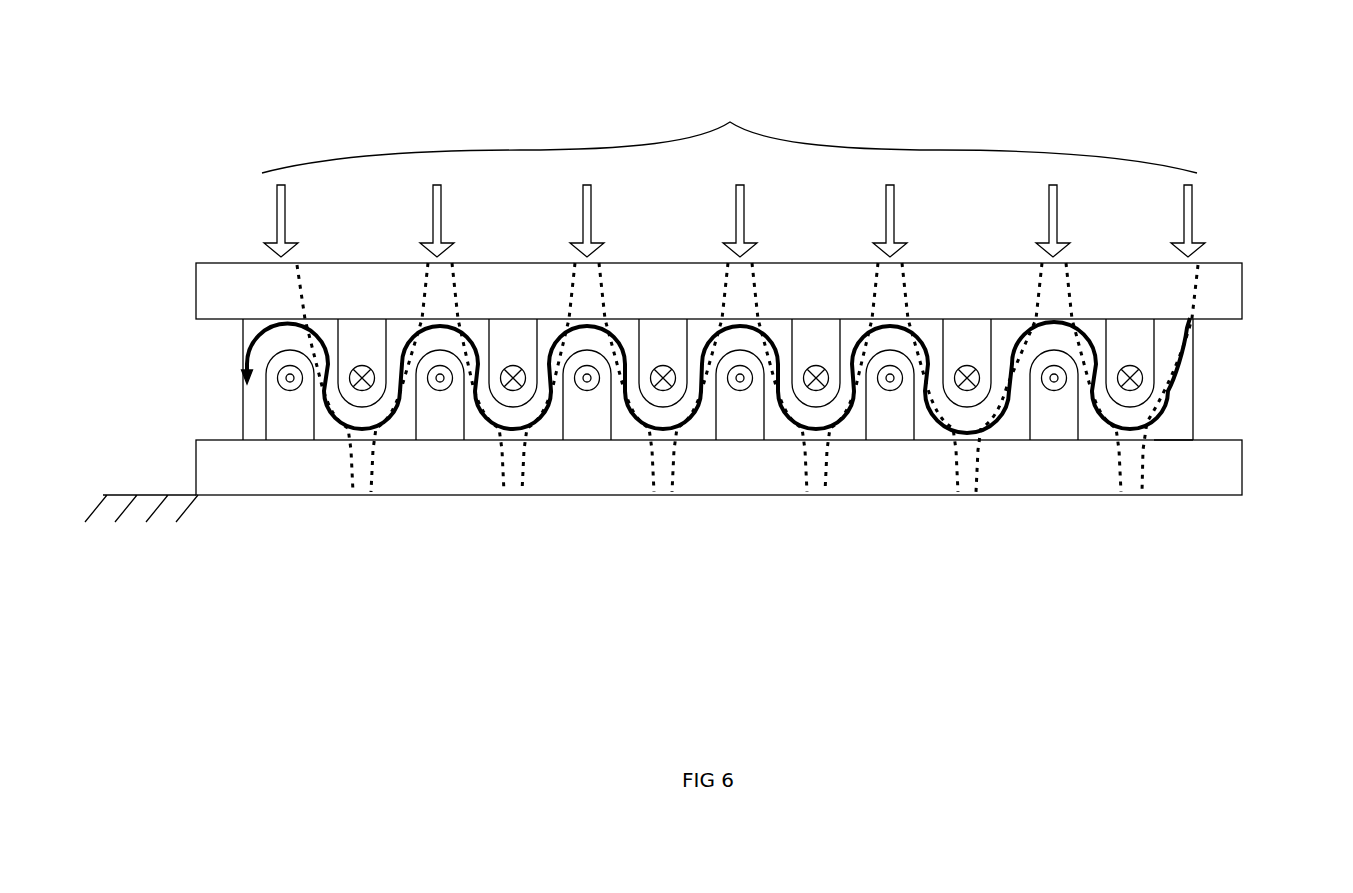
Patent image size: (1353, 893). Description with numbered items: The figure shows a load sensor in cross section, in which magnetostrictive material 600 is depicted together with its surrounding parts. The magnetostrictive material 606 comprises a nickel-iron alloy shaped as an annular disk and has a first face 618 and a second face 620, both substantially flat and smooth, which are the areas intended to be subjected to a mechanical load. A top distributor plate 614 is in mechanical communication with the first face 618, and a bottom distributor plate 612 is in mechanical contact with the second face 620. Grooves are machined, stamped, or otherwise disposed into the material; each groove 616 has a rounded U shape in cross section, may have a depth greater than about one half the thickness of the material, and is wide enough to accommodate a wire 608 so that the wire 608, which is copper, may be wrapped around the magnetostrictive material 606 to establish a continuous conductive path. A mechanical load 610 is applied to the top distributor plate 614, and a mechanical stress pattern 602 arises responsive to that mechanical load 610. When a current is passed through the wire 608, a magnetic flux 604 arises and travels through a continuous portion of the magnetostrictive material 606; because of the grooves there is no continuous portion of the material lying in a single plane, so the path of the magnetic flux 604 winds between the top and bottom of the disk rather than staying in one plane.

The magnetostrictive material 600 is at (203, 62).
The mechanical stress pattern 602 is at (1210, 286).
The magnetic flux 604 is at (1180, 414).
The magnetostrictive material 606 is at (1195, 380).
The wire 608 is at (962, 400).
The mechanical load 610 is at (1195, 228).
The distributor plate 612 is at (195, 452).
The distributor plate 614 is at (195, 285).
The groove 616 is at (662, 403).
The first face 618 is at (1163, 318).
The second face 620 is at (1177, 440).